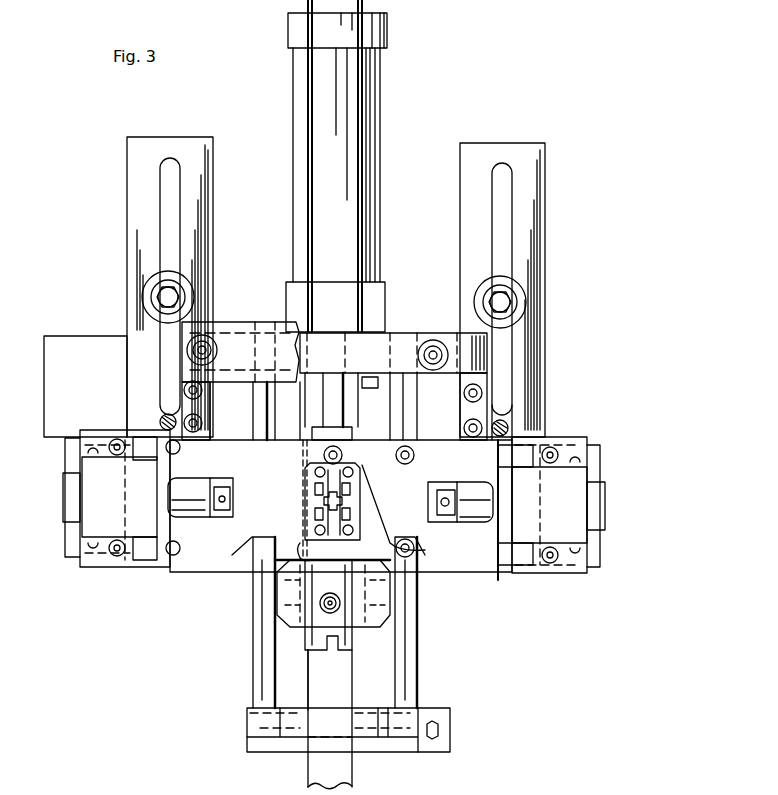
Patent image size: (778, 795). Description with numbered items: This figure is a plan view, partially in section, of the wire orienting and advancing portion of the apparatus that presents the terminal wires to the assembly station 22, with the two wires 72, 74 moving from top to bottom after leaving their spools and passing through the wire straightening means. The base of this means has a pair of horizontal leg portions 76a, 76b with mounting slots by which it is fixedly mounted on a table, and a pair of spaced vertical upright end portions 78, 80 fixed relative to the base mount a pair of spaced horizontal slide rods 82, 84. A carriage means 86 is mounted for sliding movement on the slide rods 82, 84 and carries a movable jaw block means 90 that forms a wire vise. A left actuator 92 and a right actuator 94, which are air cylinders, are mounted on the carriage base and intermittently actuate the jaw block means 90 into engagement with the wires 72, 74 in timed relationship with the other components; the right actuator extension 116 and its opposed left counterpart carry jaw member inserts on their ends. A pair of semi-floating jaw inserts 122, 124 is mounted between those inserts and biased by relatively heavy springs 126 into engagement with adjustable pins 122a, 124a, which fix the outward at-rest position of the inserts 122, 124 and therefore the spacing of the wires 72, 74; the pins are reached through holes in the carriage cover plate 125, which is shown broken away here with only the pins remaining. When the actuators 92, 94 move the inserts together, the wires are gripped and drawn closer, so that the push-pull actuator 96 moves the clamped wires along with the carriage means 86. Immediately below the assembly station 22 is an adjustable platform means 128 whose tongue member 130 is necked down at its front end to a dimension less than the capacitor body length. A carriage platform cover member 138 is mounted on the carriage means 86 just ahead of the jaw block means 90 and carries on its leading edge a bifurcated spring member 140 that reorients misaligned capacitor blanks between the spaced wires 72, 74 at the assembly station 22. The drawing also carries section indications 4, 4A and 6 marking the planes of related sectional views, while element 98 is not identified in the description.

The assembly station 22 is at (312, 687).
The wire 72 is at (363, 80).
The wire 74 is at (308, 82).
The horizontal leg portion 76a is at (523, 195).
The horizontal leg portion 76b is at (145, 160).
The vertical upright end portion 78 is at (435, 338).
The vertical upright end portion 80 is at (450, 722).
The horizontal slide rod 82 is at (415, 595).
The horizontal slide rod 84 is at (258, 617).
The carriage means 86 is at (648, 498).
The movable jaw block means 90 is at (378, 458).
The left actuator 92 is at (128, 533).
The right actuator 94 is at (598, 573).
The push-pull actuator 96 is at (395, 157).
The rod coupling 98 is at (322, 404).
The right actuator extension 116 is at (443, 522).
The semi-floating jaw insert 122 is at (308, 497).
The adjustable pin 122a is at (312, 472).
The semi-floating jaw insert 124 is at (350, 497).
The adjustable pin 124a is at (384, 551).
The carriage cover plate 125 is at (412, 478).
The spring 126 is at (324, 503).
The adjustable platform means 128 is at (340, 770).
The tongue member 130 is at (313, 758).
The carriage platform cover member 138 is at (377, 617).
The spring member 140 is at (340, 638).
The section line 4- 4 is at (365, 501).
The section line 4A is at (367, 575).
The section line 6- 6 is at (213, 398).